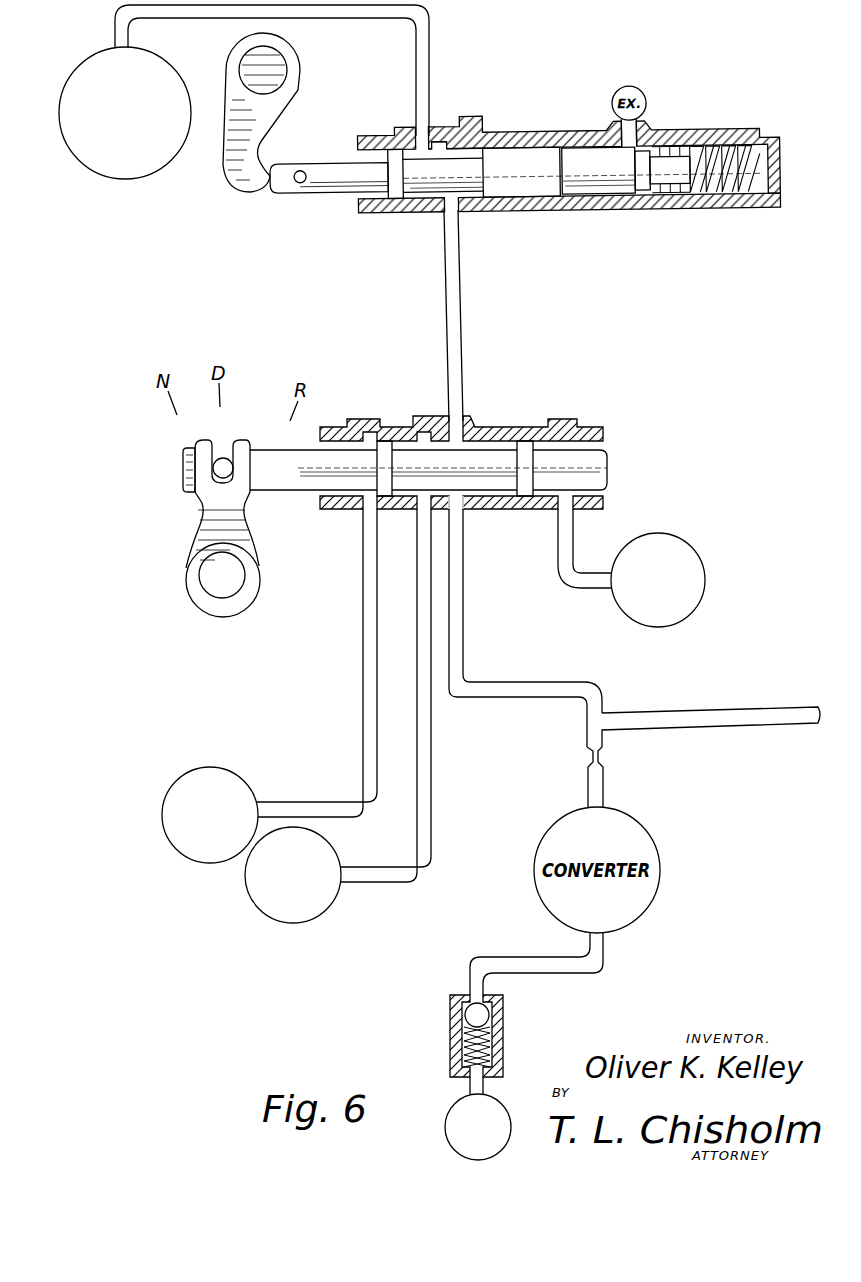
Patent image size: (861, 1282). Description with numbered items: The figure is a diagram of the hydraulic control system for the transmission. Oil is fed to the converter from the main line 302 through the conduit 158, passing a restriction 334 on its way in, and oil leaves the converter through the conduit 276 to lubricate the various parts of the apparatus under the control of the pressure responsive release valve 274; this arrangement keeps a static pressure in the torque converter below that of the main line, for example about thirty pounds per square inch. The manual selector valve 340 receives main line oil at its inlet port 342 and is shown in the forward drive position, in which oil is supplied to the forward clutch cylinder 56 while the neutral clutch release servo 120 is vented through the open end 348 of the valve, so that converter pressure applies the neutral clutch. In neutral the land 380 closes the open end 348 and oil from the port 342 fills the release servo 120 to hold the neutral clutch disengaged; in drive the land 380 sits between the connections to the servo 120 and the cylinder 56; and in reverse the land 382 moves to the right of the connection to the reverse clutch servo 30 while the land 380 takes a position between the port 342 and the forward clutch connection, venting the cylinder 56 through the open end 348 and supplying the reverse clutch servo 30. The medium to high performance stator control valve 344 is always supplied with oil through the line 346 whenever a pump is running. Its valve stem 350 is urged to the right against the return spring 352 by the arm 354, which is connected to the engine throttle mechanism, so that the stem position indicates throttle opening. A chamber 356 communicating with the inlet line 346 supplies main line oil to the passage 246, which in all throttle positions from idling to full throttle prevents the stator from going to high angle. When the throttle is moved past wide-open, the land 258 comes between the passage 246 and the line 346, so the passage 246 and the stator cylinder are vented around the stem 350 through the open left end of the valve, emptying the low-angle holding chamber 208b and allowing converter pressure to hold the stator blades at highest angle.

The low-angle holding chamber 208b is at (108, 58).
The passage 246 is at (430, 60).
The land 258 is at (400, 150).
The arm 354 is at (265, 110).
The chamber 356 is at (472, 148).
The valve stem 350 is at (325, 182).
The medium to high performance stator control valve 344 is at (380, 212).
The line 346 is at (455, 210).
The return spring 352 is at (708, 198).
The manual selector valve 340 is at (366, 410).
The land 380 is at (383, 445).
The land 382 is at (526, 446).
The open end 348 is at (330, 490).
The inlet port 342 is at (458, 502).
The reverse clutch servo 30 is at (683, 605).
The main line 302 is at (553, 678).
The neutral clutch release servo 120 is at (187, 778).
The forward clutch cylinder 56 is at (285, 910).
The conduit 158 is at (594, 740).
The restriction 334 is at (592, 758).
The pressure responsive release valve 274 is at (467, 1012).
The conduit 276 is at (475, 1085).